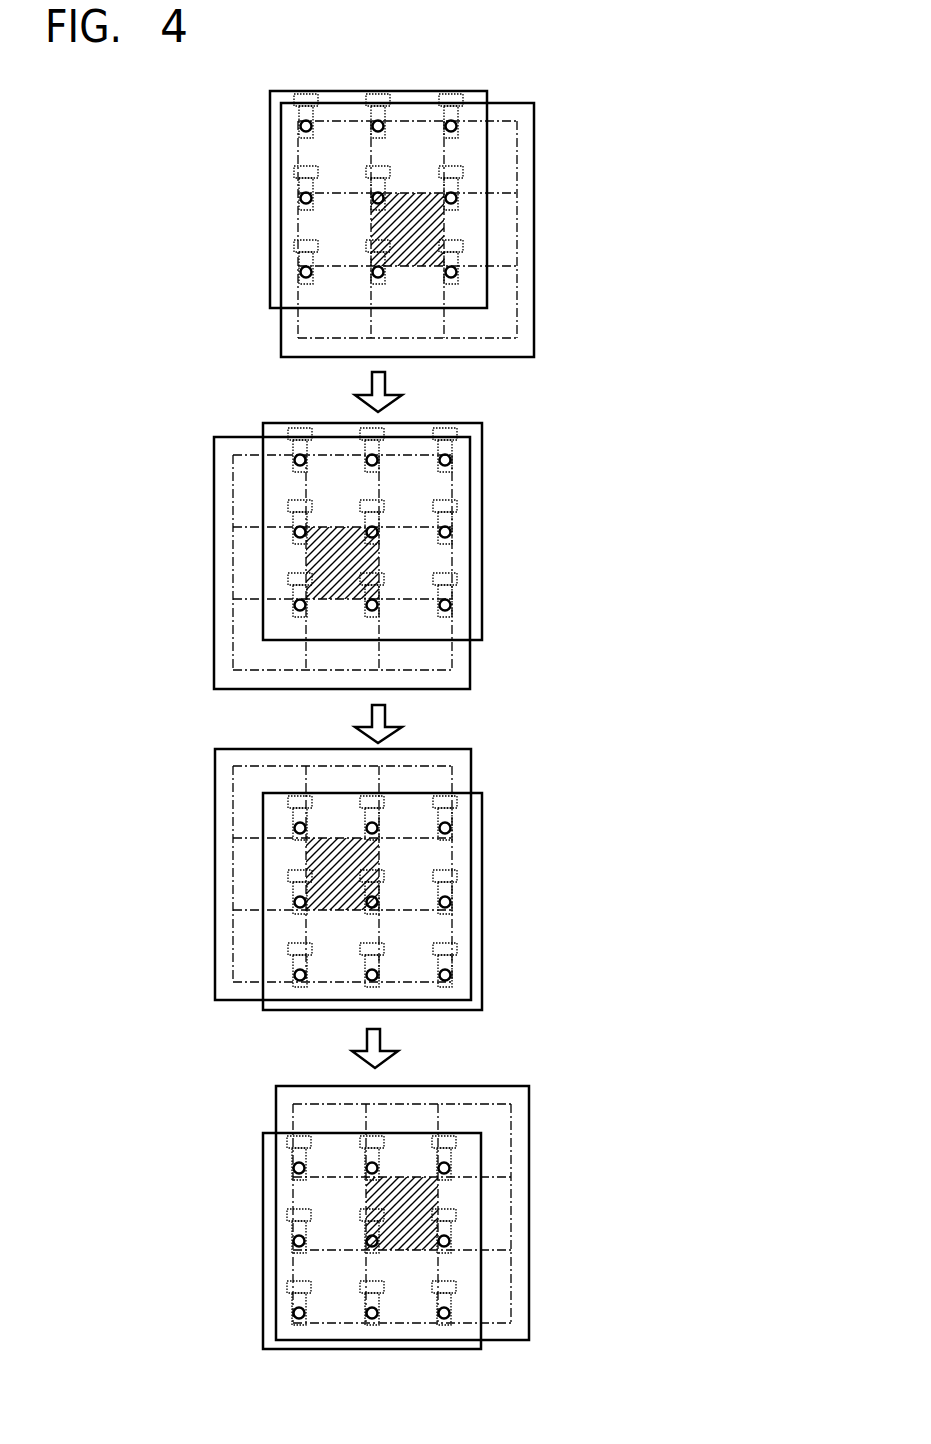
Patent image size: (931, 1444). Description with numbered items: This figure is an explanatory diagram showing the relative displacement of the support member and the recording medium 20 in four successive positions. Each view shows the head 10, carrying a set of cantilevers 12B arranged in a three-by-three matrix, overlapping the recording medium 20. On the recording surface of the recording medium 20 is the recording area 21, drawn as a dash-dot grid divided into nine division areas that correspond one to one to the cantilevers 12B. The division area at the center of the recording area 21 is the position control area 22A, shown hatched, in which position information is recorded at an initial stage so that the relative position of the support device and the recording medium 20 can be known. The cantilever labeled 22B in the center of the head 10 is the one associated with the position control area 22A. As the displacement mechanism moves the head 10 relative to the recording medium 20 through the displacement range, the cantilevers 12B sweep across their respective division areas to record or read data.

The head 10 is at (258, 146).
The cantilever 12B is at (303, 270).
The recording medium 20 is at (541, 184).
The recording area 21 is at (517, 300).
The position control area 22A is at (427, 240).
The target electrode 22B is at (376, 196).